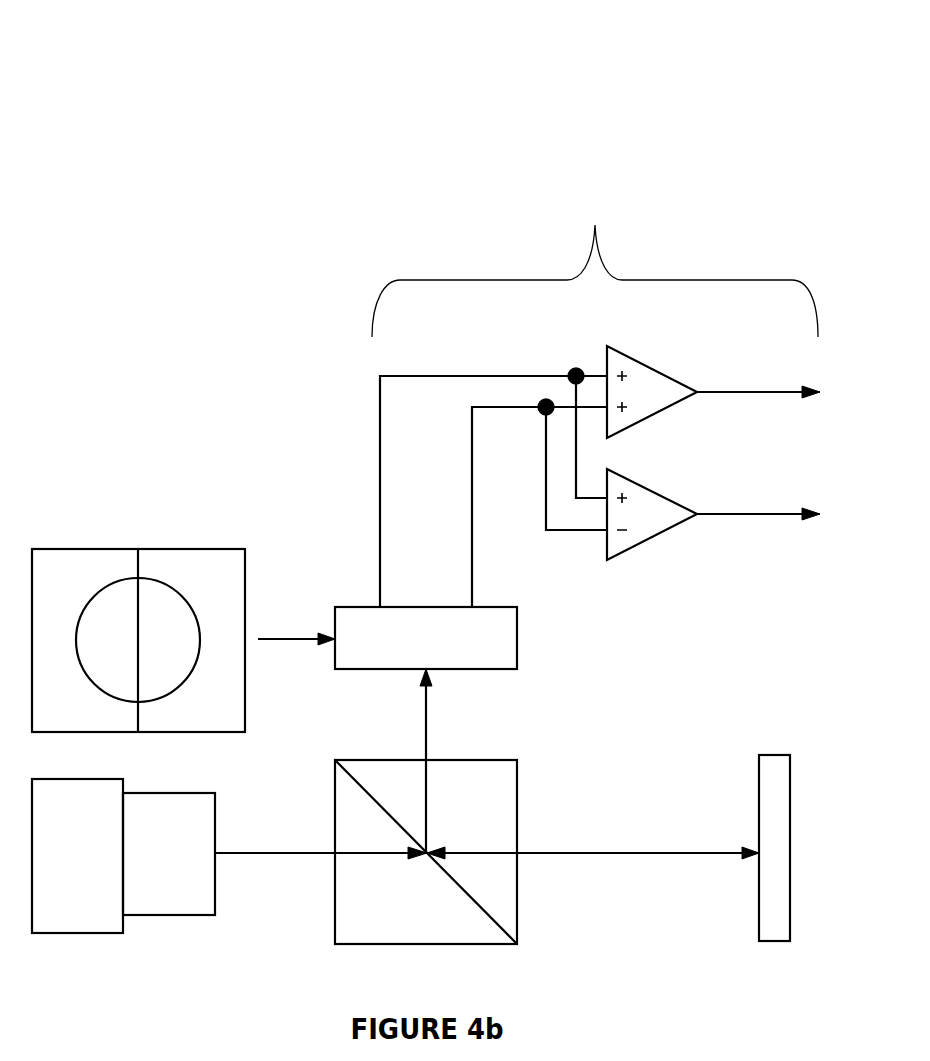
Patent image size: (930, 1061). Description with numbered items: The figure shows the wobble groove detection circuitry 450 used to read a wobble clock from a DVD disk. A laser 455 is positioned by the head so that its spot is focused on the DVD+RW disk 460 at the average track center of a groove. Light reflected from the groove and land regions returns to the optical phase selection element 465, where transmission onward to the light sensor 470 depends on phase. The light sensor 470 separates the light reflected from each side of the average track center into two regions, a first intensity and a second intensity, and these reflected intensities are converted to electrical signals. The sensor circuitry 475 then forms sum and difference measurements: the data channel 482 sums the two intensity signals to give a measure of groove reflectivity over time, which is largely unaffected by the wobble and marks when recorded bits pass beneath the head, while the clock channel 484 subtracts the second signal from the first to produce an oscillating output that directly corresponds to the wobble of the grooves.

The wobble groove detection circuitry 450 is at (635, 90).
The laser 455 is at (123, 856).
The DVD+RW disk 460 is at (775, 821).
The optical phase selection element 465 is at (426, 852).
The light sensor 470 is at (274, 612).
The sensor circuitry 475 is at (592, 383).
The data channel 482 is at (713, 389).
The clock channel 484 is at (716, 512).